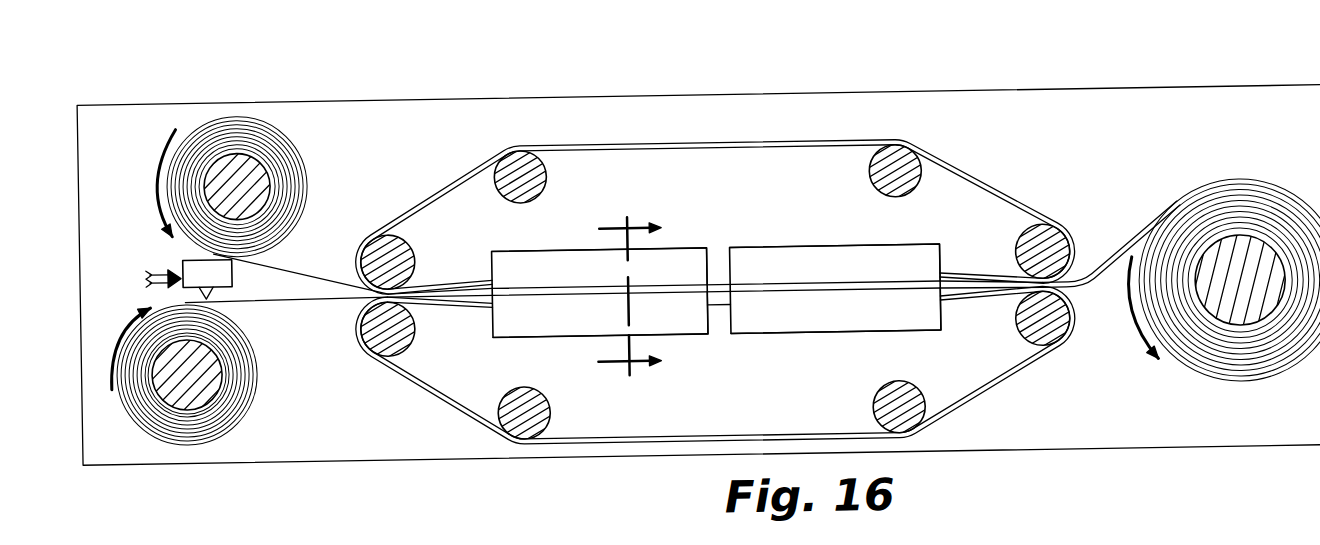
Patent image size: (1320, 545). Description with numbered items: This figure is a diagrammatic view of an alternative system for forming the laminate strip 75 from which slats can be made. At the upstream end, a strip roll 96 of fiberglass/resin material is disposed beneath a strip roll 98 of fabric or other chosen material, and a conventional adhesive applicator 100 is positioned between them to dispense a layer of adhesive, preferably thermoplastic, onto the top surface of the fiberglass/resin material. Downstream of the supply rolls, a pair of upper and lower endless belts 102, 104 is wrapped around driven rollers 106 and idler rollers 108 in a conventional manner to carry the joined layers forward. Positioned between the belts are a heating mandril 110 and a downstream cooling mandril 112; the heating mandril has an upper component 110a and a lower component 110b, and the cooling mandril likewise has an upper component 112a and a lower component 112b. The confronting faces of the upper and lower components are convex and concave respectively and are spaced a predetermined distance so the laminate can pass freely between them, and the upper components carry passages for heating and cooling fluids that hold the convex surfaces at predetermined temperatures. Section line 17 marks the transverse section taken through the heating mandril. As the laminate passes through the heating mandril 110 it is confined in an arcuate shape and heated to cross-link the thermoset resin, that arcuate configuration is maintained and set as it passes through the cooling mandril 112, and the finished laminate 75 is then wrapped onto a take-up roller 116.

The laminate strip 75 is at (1117, 252).
The strip roll of fiberglass/resin material 96 is at (139, 434).
The strip roll of fabric 98 is at (295, 118).
The adhesive applicator 100 is at (207, 267).
The upper endless belt 102 is at (413, 207).
The lower endless belt 104 is at (450, 409).
The driven rollers 106 is at (408, 244).
The idler rollers 108 is at (521, 153).
The heating mandril 110 is at (551, 220).
The upper component of heating mandril 110a is at (677, 253).
The lower component of heating mandril 110b is at (670, 322).
The cooling mandril 112 is at (792, 195).
The upper component of cooling mandril 112a is at (798, 269).
The lower component of cooling mandril 112b is at (749, 334).
The take-up roller 116 is at (1238, 410).
The section line 17- 17 is at (644, 292).